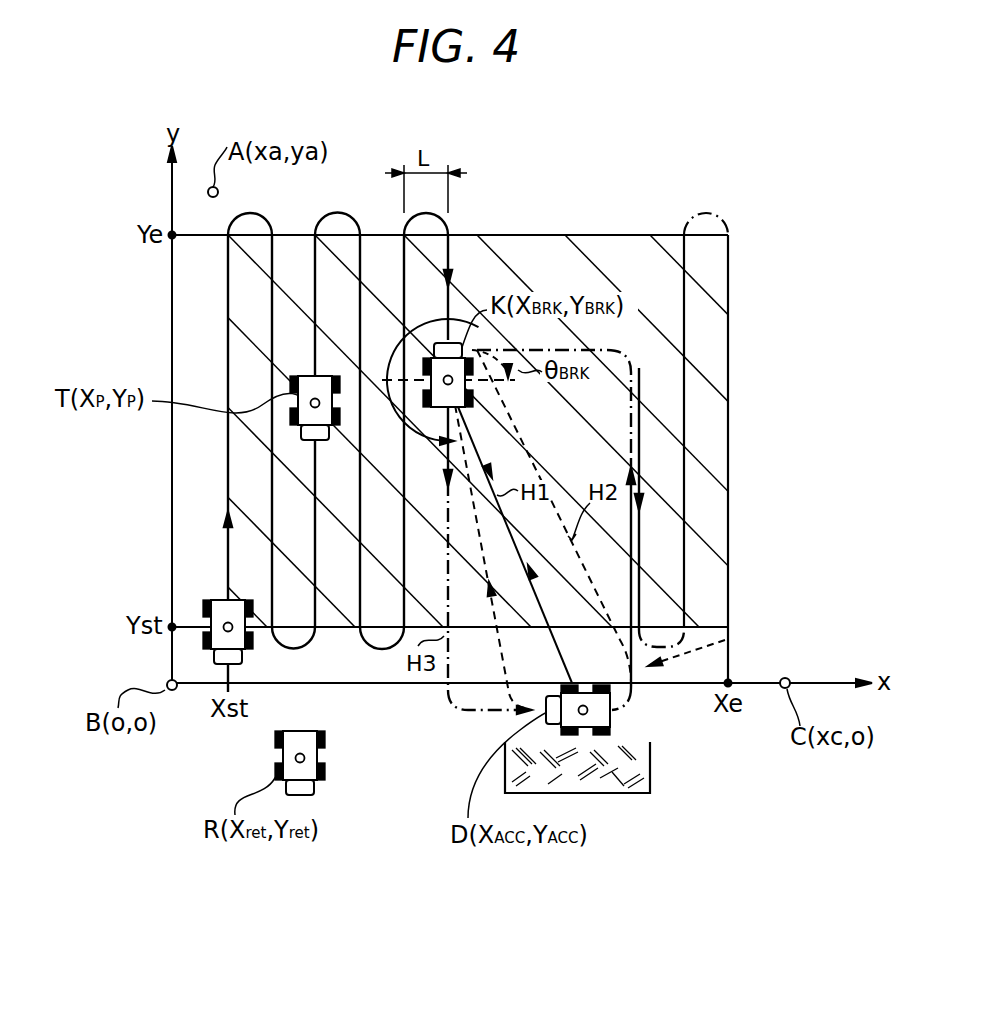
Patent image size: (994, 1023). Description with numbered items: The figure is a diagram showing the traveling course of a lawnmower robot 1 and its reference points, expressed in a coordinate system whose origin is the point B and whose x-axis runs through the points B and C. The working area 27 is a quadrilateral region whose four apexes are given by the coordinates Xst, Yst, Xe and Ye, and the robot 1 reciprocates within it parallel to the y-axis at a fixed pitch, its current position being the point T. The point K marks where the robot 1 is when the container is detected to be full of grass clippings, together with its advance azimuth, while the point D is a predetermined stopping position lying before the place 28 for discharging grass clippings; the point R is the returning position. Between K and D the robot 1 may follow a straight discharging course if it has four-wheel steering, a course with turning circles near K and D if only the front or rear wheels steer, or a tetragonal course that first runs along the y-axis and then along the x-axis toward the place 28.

The robot 1 is at (312, 376).
The working area 27 is at (613, 234).
The place for discharging grass clippings 28 is at (650, 770).